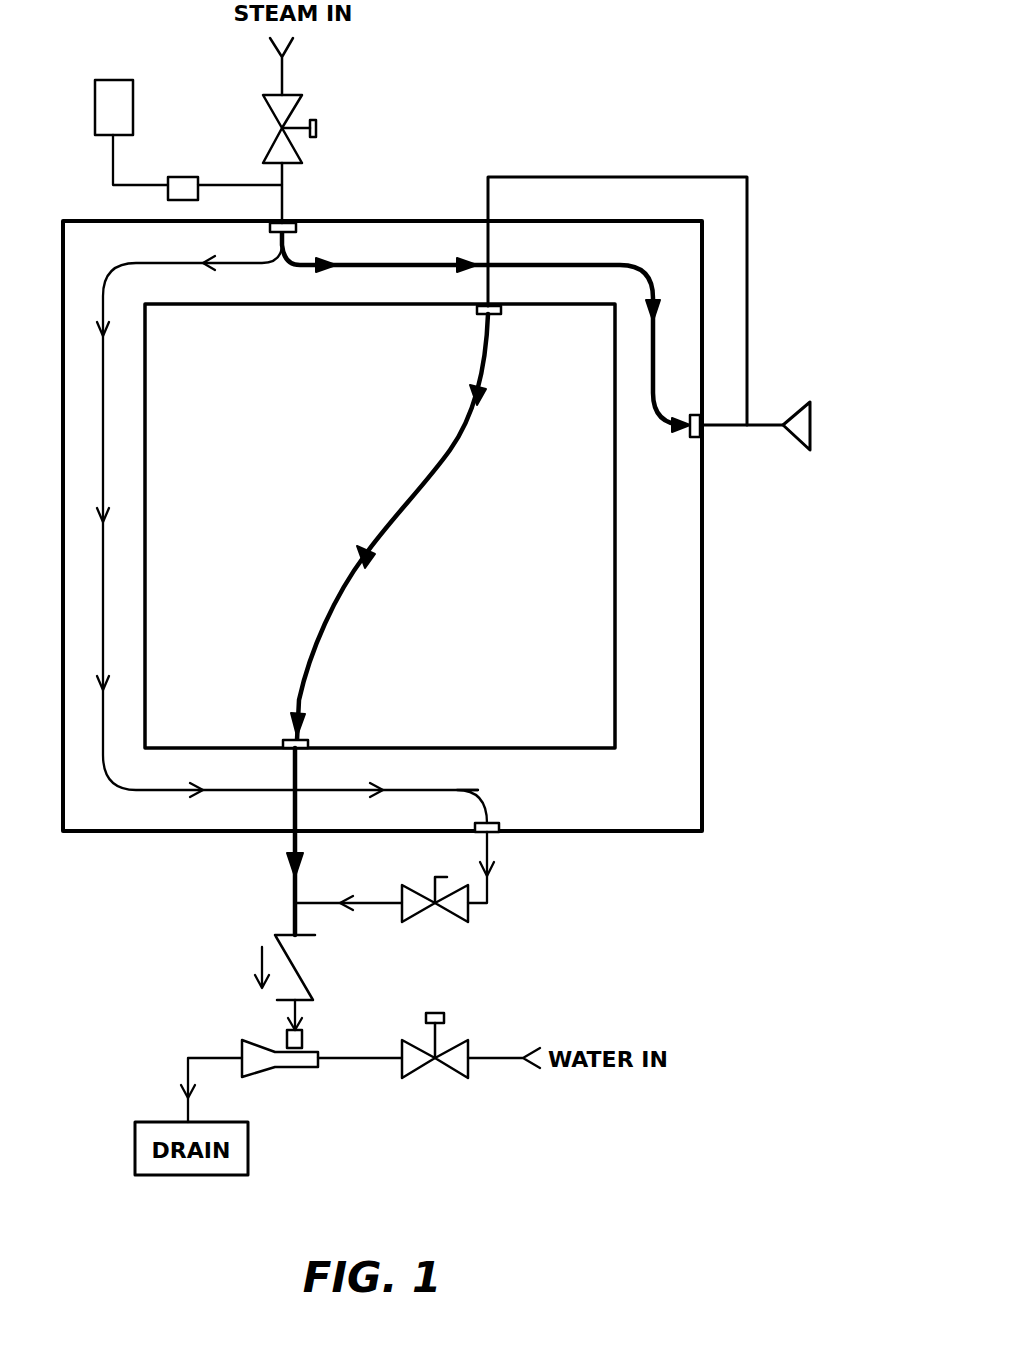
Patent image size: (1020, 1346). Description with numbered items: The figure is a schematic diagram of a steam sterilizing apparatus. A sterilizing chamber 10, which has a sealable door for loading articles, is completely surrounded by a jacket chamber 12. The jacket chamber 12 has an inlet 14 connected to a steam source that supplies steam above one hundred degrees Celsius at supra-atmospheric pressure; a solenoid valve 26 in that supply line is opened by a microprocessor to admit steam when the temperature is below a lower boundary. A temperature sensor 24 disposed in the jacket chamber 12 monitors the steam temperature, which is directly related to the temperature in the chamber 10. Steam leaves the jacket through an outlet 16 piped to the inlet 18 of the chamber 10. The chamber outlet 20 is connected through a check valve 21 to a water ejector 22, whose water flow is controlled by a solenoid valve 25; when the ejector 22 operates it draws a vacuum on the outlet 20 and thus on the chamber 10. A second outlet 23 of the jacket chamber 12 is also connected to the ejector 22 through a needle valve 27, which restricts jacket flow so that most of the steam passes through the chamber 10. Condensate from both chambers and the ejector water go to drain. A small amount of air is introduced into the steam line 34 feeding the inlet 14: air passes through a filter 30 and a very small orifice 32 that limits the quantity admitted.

The sterilizing chamber 10 is at (597, 608).
The jacket chamber 12 is at (702, 707).
The inlet 14 is at (290, 232).
The outlet 16 is at (690, 440).
The inlet 18 is at (503, 314).
The outlet 20 is at (308, 742).
The check valve 21 is at (297, 957).
The water ejector 22 is at (311, 1068).
The second outlet 23 is at (495, 823).
The temperature sensor 24 is at (807, 402).
The solenoid valve 25 is at (455, 1040).
The solenoid valve 26 is at (298, 102).
The needle valve 27 is at (440, 922).
The filter 30 is at (133, 96).
The orifice 32 is at (180, 177).
The steam line 34 is at (285, 185).